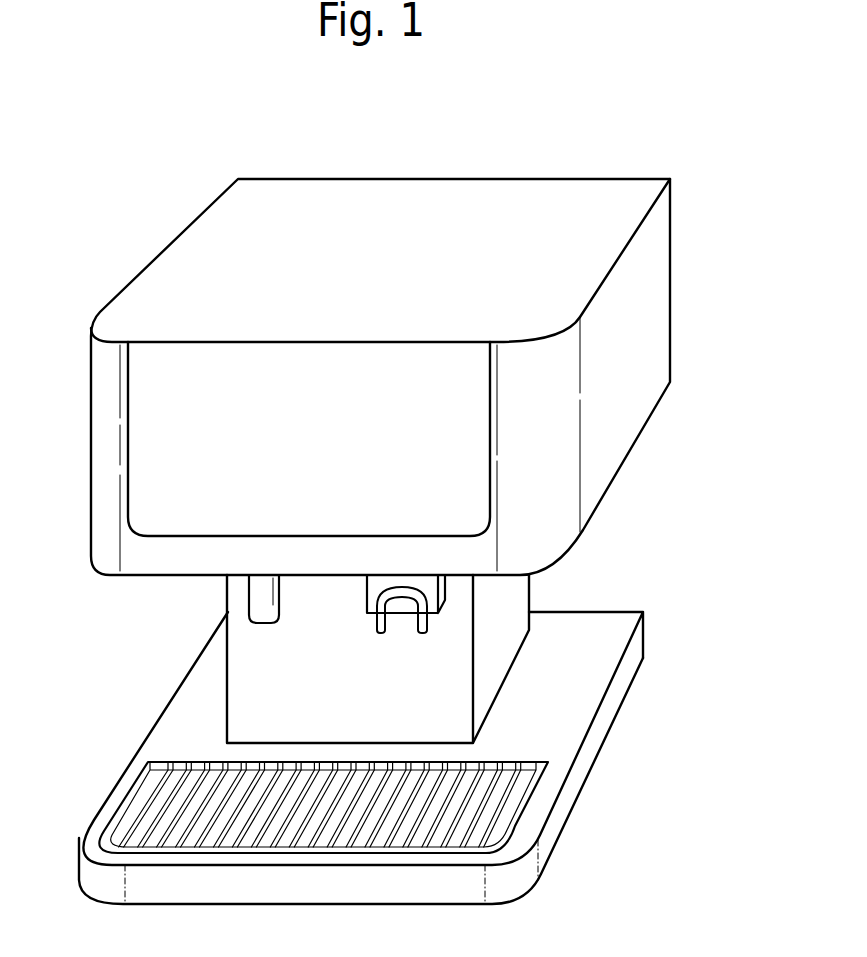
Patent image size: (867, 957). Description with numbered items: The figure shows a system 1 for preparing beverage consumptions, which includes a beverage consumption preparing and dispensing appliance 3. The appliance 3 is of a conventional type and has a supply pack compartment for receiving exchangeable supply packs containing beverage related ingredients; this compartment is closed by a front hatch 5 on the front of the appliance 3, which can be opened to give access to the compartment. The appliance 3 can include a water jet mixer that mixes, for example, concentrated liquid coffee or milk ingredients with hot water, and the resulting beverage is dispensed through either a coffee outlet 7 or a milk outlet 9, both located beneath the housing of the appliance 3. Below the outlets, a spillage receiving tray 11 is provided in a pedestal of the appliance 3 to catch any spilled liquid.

The system 1 is at (485, 148).
The beverage consumption preparing and dispensing appliance 3 is at (617, 398).
The front hatch 5 is at (162, 429).
The coffee outlet 7 is at (424, 617).
The milk outlet 9 is at (259, 598).
The spillage receiving tray 11 is at (153, 818).